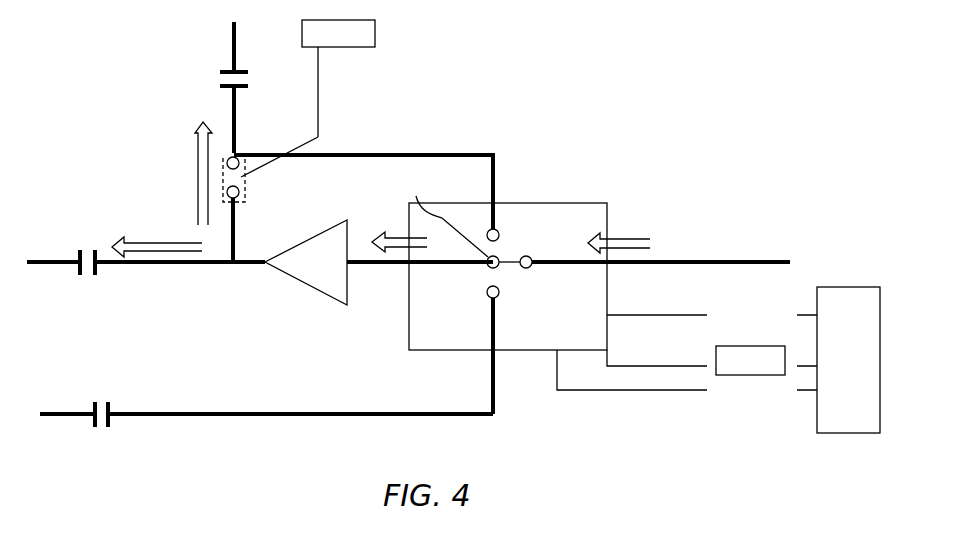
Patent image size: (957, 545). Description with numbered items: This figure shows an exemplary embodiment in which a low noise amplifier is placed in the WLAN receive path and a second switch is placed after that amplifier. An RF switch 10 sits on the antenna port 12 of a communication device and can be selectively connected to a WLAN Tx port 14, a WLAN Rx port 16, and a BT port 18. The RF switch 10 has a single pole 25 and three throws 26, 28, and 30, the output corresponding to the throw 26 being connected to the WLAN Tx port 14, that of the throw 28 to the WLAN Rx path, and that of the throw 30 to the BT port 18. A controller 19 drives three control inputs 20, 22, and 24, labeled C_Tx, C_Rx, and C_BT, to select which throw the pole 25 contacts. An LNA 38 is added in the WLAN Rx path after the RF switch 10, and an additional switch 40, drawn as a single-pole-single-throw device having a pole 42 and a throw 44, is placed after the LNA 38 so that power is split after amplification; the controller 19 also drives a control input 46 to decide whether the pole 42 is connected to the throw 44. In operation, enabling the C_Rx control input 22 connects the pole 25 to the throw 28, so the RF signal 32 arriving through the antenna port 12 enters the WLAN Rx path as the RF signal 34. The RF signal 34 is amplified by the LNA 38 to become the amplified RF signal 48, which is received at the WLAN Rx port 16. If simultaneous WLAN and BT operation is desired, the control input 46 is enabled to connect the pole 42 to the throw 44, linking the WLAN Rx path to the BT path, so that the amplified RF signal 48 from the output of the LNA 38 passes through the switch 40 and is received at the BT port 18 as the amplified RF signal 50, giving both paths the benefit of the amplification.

The RF switch 10 is at (607, 203).
The antenna port 12 is at (720, 260).
The WLAN transmit (Tx) port 14 is at (93, 422).
The WLAN receive (Rx) port 16 is at (80, 268).
The BT port 18 is at (223, 71).
The controller 19 is at (830, 287).
The control input C_Tx 20 is at (677, 313).
The control input C_Rx 22 is at (650, 366).
The control input C_BT 24 is at (653, 392).
The pole 25 is at (530, 268).
The throw 26 is at (486, 292).
The throw 28 is at (445, 215).
The throw 30 is at (498, 232).
The RF signal 32 is at (637, 235).
The RF signal 34 is at (391, 250).
The low noise amplifier (LNA) 38 is at (292, 277).
The switch 40 is at (246, 192).
The pole 42 is at (232, 200).
The throw 44 is at (253, 158).
The control input 46 is at (375, 32).
The amplified RF signal 48 is at (147, 253).
The amplified RF signal 50 is at (197, 170).